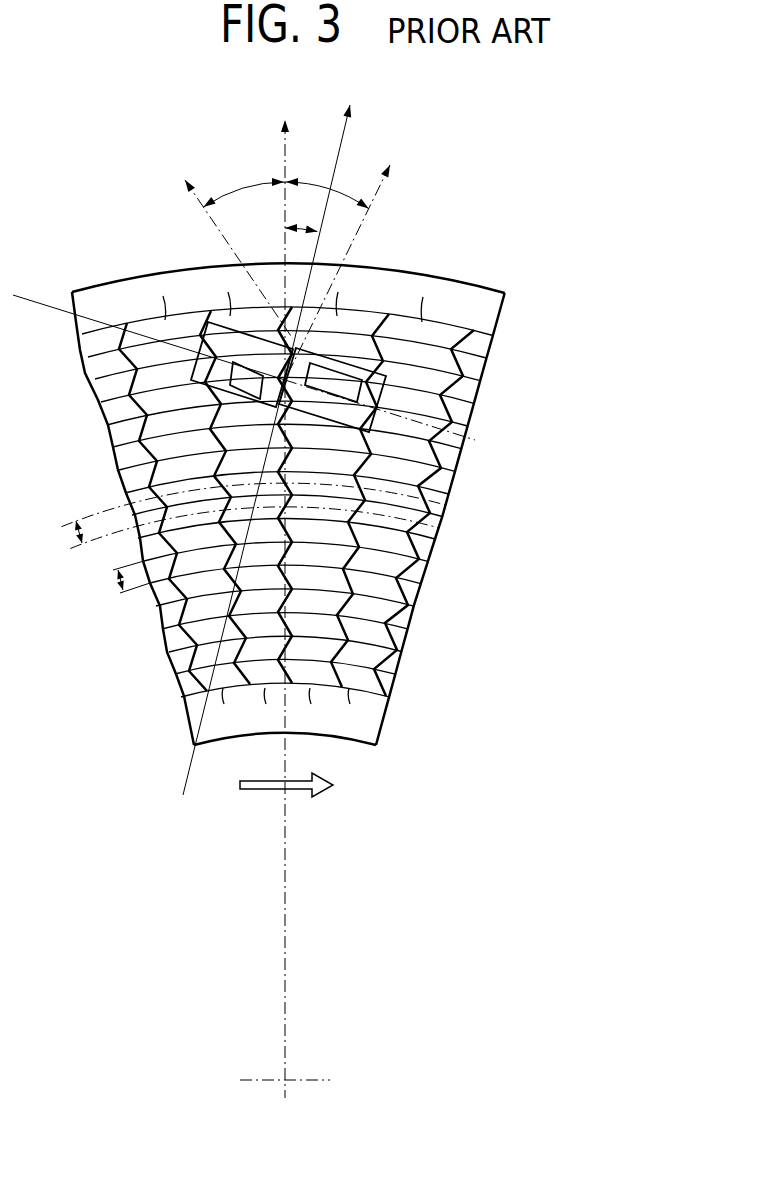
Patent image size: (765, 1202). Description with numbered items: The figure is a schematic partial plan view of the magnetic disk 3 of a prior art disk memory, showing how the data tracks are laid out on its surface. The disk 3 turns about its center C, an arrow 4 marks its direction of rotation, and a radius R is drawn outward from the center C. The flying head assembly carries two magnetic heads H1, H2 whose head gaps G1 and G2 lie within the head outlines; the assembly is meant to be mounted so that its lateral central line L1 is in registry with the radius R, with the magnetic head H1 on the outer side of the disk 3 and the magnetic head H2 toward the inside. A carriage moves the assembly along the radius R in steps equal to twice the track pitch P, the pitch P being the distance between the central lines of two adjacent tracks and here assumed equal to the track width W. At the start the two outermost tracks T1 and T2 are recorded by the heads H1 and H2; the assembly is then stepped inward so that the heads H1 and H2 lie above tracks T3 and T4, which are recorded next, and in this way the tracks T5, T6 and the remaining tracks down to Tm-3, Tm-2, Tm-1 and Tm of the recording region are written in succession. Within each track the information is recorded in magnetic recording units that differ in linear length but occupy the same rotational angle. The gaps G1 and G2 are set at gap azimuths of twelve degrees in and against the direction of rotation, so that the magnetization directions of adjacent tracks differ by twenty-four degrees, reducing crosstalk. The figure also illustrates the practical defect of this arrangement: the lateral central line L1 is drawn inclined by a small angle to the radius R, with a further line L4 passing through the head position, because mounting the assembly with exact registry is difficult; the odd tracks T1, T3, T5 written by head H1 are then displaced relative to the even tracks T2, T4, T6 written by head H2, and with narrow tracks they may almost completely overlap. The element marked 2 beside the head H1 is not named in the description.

The magnetic disk 3 is at (472, 303).
The tread block 2 is at (370, 422).
The rotation direction arrow 4 is at (262, 797).
The radius R is at (290, 860).
The center C is at (288, 1078).
The track pitch P is at (251, 518).
The track width W is at (260, 571).
The lateral central line L1 is at (344, 138).
The fourth line L4 is at (44, 304).
The magnetic head H1 is at (365, 396).
The magnetic head H2 is at (208, 382).
The head gap G1 is at (330, 400).
The head gap G2 is at (246, 396).
The data track T1 is at (485, 346).
The data track T2 is at (100, 374).
The data track T3 is at (470, 392).
The data track T4 is at (110, 410).
The data track T5 is at (465, 440).
The data track T6 is at (115, 446).
The data track Tm-3 is at (400, 614).
The data track Tm-2 is at (183, 634).
The data track Tm-1 is at (395, 662).
The data track Tm is at (190, 682).